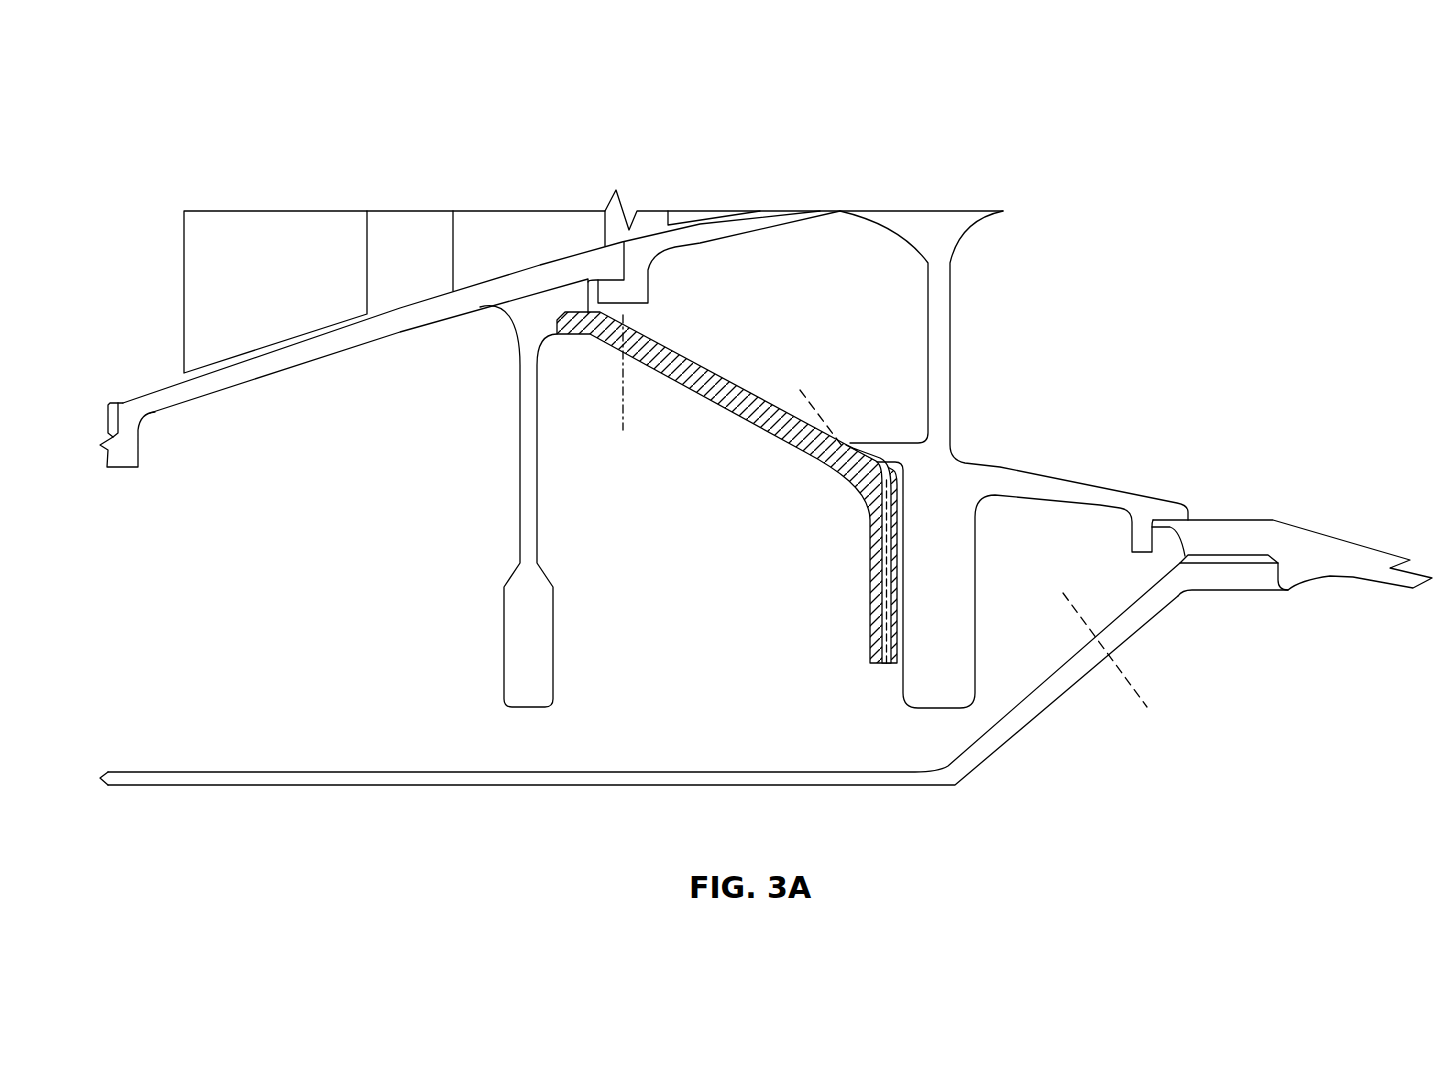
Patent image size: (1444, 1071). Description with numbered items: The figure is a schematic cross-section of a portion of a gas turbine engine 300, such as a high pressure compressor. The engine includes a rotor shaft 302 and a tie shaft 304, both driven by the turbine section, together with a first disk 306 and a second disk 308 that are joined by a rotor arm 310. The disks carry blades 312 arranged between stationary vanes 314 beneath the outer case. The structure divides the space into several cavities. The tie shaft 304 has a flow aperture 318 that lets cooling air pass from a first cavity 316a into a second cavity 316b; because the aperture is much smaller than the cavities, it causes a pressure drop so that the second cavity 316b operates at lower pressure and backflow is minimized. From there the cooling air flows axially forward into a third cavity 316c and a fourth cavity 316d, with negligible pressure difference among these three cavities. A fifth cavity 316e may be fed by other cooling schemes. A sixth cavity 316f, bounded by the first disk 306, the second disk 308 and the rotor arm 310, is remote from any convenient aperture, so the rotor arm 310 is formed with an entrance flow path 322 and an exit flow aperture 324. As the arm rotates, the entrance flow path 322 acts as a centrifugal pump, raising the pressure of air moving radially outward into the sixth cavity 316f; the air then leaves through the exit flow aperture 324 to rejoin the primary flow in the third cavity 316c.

The gas turbine engine 300 is at (1298, 106).
The rotor shaft 302 is at (1305, 547).
The tie shaft 304 is at (952, 776).
The first disk 306 is at (520, 667).
The second disk 308 is at (960, 482).
The rotor arm 310 is at (727, 487).
The blades 312 is at (513, 237).
The vanes 314 is at (257, 255).
The first cavity 316a is at (1216, 673).
The second cavity 316b is at (1014, 552).
The third cavity 316c is at (681, 653).
The fourth cavity 316d is at (284, 602).
The fifth cavity 316e is at (1151, 410).
The sixth cavity 316f is at (785, 328).
The flow aperture 318 is at (1106, 664).
The entrance flow path 322 is at (850, 436).
The exit flow aperture 324 is at (611, 362).